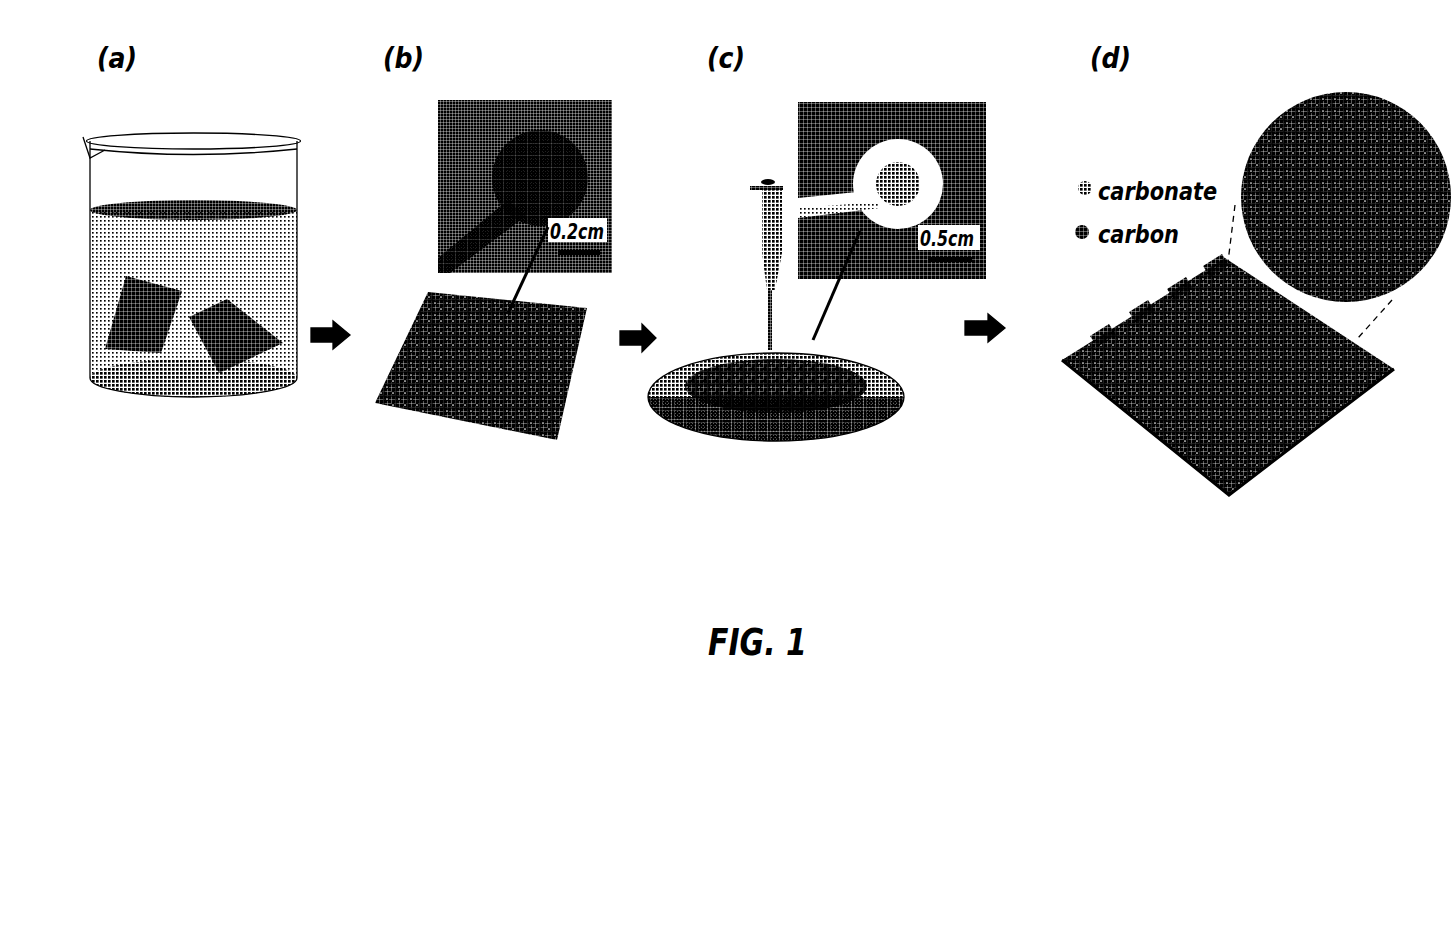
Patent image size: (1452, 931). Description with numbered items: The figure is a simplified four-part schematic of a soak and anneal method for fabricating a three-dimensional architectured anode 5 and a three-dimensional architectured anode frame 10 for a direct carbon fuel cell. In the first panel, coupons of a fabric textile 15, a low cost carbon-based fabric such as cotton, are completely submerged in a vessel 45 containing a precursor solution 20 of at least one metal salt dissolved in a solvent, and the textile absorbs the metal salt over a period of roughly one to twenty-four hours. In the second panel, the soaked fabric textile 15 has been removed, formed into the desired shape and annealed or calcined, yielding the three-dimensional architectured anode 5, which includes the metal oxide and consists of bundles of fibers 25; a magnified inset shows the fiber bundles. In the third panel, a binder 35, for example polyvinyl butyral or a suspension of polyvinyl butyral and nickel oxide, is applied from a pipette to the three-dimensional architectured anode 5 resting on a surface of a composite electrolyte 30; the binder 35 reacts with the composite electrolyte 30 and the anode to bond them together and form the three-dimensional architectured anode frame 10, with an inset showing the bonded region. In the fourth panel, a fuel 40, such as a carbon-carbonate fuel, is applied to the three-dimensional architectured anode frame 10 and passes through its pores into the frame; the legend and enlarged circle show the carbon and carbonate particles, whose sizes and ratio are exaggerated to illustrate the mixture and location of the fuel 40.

The 3D architectured anode 5 is at (500, 410).
The 3D architectured anode frame 10 is at (912, 456).
The fabric textile 15 is at (135, 351).
The precursor solution 20 is at (249, 261).
The bundles of fibers 25 is at (415, 383).
The composite electrolyte 30 is at (682, 407).
The binder 35 is at (768, 325).
The fuel 40 is at (1300, 440).
The vessel 45 is at (299, 179).